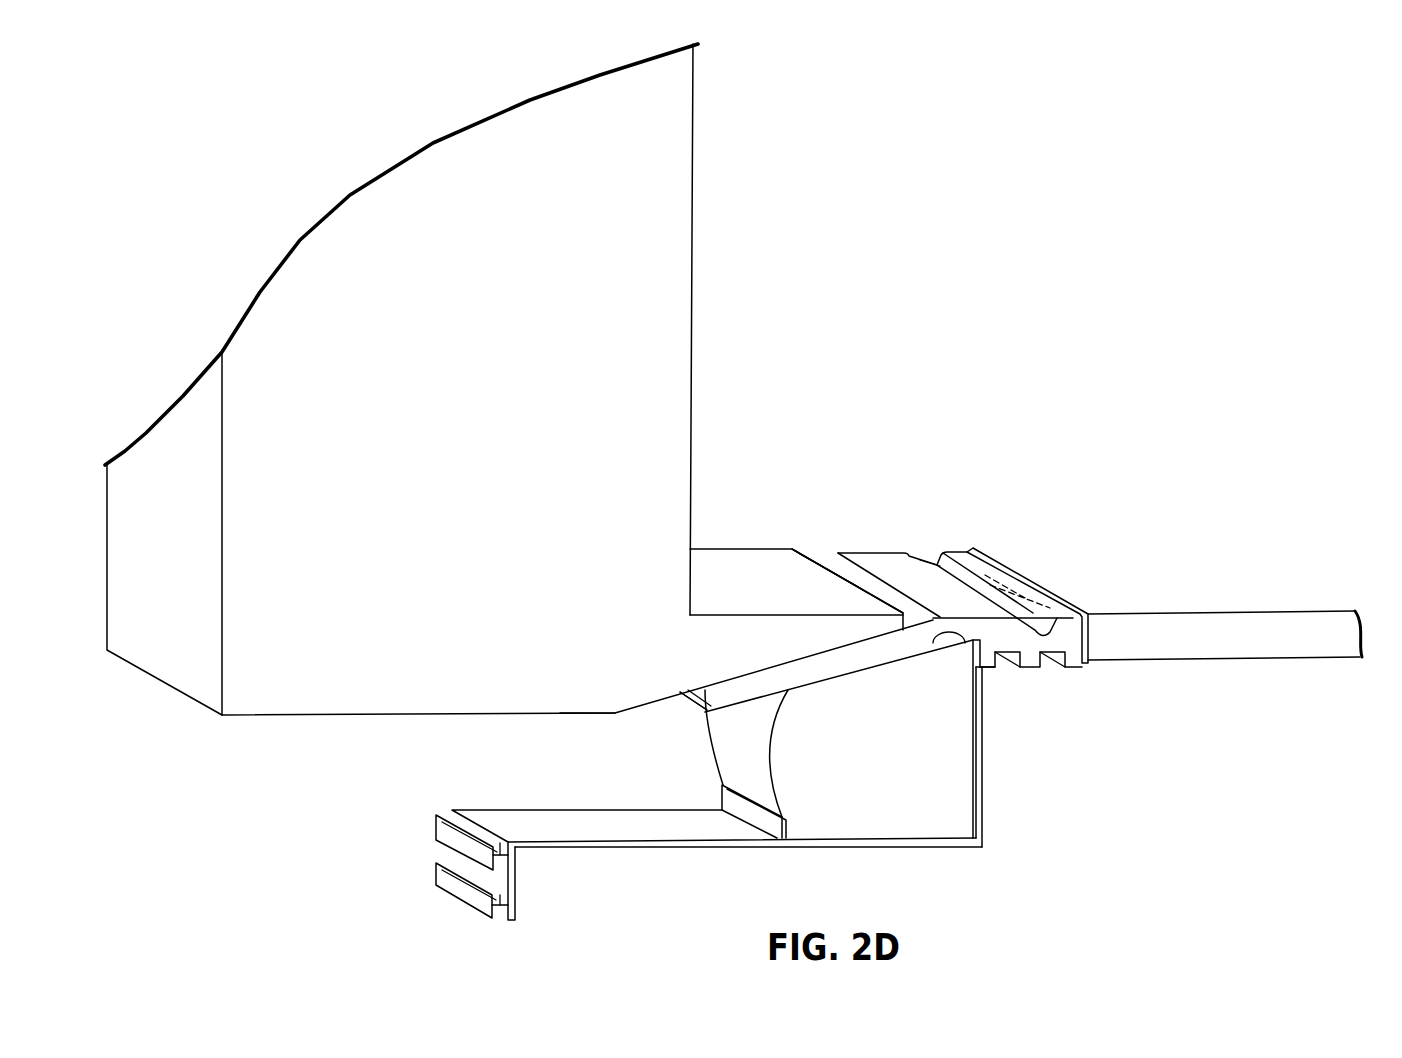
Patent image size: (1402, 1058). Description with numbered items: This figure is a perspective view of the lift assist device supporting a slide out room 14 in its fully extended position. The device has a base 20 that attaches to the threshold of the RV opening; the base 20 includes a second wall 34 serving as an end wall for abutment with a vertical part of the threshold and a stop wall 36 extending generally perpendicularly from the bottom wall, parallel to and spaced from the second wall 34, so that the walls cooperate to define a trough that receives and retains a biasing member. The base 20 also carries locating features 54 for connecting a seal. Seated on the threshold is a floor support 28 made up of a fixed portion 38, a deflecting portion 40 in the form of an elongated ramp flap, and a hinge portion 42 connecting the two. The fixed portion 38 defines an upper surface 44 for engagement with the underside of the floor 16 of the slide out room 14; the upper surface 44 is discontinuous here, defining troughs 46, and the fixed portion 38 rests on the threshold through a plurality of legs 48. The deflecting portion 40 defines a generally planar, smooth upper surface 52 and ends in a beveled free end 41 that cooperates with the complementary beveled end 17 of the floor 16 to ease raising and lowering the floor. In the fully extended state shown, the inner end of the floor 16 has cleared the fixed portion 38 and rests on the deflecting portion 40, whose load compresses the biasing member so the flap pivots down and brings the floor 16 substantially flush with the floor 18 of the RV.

The slide out room 14 is at (644, 181).
The floor of the slide out room 16 is at (742, 575).
The beveled end of the floor 17 is at (655, 708).
The floor of the RV 18 is at (1252, 630).
The base 20 is at (608, 850).
The floor support 28 is at (901, 635).
The second wall 34 is at (983, 757).
The stop wall 36 is at (767, 820).
The fixed portion 38 is at (1000, 567).
The deflecting portion 40 is at (742, 692).
The free end of the deflecting portion 41 is at (698, 708).
The hinge portion 42 is at (838, 542).
The upper surface 44 is at (875, 540).
The troughs 46 is at (926, 548).
The legs 48 is at (997, 667).
The upper surface of the deflecting portion 52 is at (824, 555).
The locating features 54 is at (443, 820).